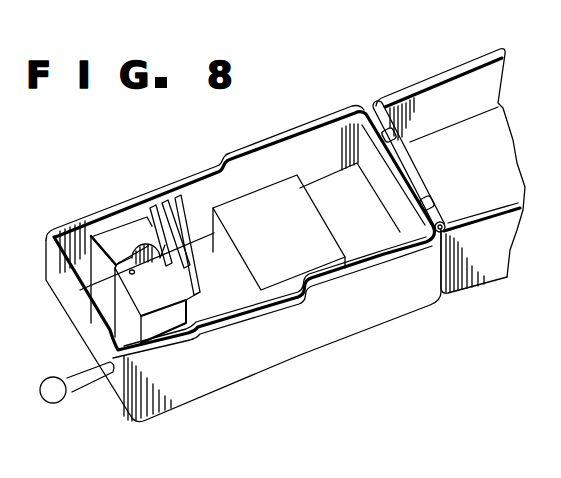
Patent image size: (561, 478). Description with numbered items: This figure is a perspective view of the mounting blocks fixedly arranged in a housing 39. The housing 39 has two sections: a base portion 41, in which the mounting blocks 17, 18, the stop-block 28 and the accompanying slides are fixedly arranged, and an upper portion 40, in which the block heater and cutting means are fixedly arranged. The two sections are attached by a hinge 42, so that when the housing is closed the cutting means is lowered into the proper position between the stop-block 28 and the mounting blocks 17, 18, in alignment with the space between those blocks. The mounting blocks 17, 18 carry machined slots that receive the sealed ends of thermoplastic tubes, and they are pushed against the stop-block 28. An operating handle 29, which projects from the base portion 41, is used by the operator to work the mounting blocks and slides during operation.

The mounting block 17 is at (109, 236).
The mounting block 18 is at (172, 298).
The stop-block 28 is at (257, 197).
The operating handle 29 is at (63, 404).
The housing 39 is at (401, 303).
The upper portion of housing 40 is at (450, 72).
The base portion of housing 41 is at (336, 120).
The hinge 42 is at (440, 206).